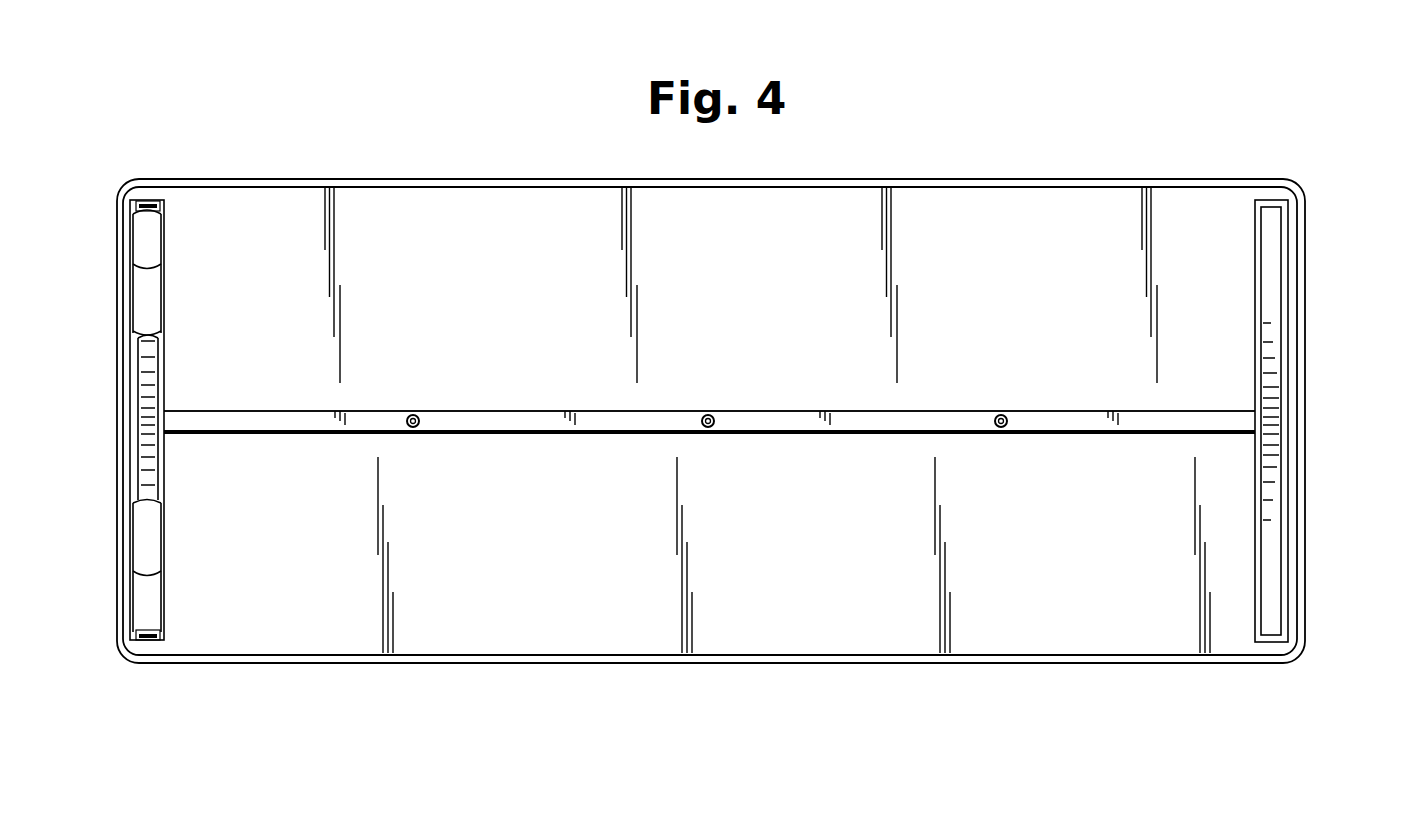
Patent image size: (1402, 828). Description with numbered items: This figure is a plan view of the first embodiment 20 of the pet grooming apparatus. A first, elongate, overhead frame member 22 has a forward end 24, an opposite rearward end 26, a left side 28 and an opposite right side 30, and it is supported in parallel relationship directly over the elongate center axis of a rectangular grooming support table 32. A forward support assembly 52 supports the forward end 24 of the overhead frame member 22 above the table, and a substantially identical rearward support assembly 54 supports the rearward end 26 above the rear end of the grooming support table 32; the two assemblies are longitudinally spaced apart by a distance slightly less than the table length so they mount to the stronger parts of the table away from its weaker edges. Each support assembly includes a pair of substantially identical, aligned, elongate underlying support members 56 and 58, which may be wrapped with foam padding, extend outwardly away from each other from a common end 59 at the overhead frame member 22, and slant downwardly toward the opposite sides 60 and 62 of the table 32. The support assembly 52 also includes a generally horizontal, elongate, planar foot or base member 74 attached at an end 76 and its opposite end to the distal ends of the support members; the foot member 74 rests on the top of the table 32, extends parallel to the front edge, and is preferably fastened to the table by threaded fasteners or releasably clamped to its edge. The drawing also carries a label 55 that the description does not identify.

The first embodiment of pet grooming apparatus 20 is at (957, 168).
The overhead frame member 22 is at (603, 410).
The forward end 24 is at (163, 409).
The rearward end 26 is at (1256, 409).
The left side 28 is at (472, 433).
The right side 30 is at (443, 410).
The grooming support table 32 is at (560, 637).
The forward support assembly 52 is at (101, 408).
The rearward support assembly 54 is at (1305, 328).
The upper leg segment 55 is at (148, 292).
The underlying support member 56 is at (145, 350).
The underlying support member 58 is at (140, 497).
The common end 59 is at (147, 410).
The side of table 60 is at (262, 186).
The side of table 62 is at (411, 663).
The foot member 74 is at (150, 640).
The end of foot member 76 is at (152, 203).